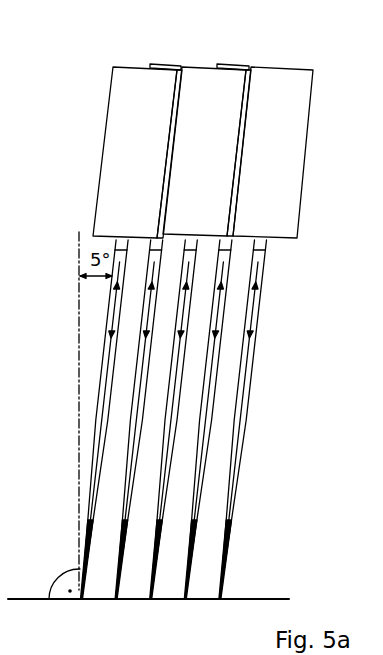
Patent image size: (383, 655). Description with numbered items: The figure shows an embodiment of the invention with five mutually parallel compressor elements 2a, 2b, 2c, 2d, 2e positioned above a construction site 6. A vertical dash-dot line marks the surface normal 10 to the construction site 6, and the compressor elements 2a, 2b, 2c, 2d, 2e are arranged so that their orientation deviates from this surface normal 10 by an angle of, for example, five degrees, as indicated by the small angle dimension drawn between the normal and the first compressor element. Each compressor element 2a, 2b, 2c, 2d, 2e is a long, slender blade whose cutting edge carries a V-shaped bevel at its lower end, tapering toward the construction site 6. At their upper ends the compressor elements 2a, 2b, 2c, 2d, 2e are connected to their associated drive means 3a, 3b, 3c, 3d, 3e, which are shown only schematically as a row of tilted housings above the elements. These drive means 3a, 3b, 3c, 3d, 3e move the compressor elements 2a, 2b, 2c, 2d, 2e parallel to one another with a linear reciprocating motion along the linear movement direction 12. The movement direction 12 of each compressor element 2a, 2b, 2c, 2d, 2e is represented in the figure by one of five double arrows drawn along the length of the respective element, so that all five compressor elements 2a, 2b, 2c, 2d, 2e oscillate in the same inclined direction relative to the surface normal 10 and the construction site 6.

The compressor element 2a is at (97, 470).
The compressor element 2b is at (130, 456).
The compressor element 2c is at (175, 390).
The compressor element 2d is at (207, 418).
The compressor element 2e is at (240, 448).
The drive means 3a is at (138, 85).
The drive means 3b is at (165, 66).
The drive means 3c is at (212, 80).
The drive means 3d is at (237, 66).
The drive means 3e is at (283, 82).
The construction site 6 is at (248, 597).
The surface normal 10 is at (80, 240).
The linear movement direction 12 is at (190, 290).